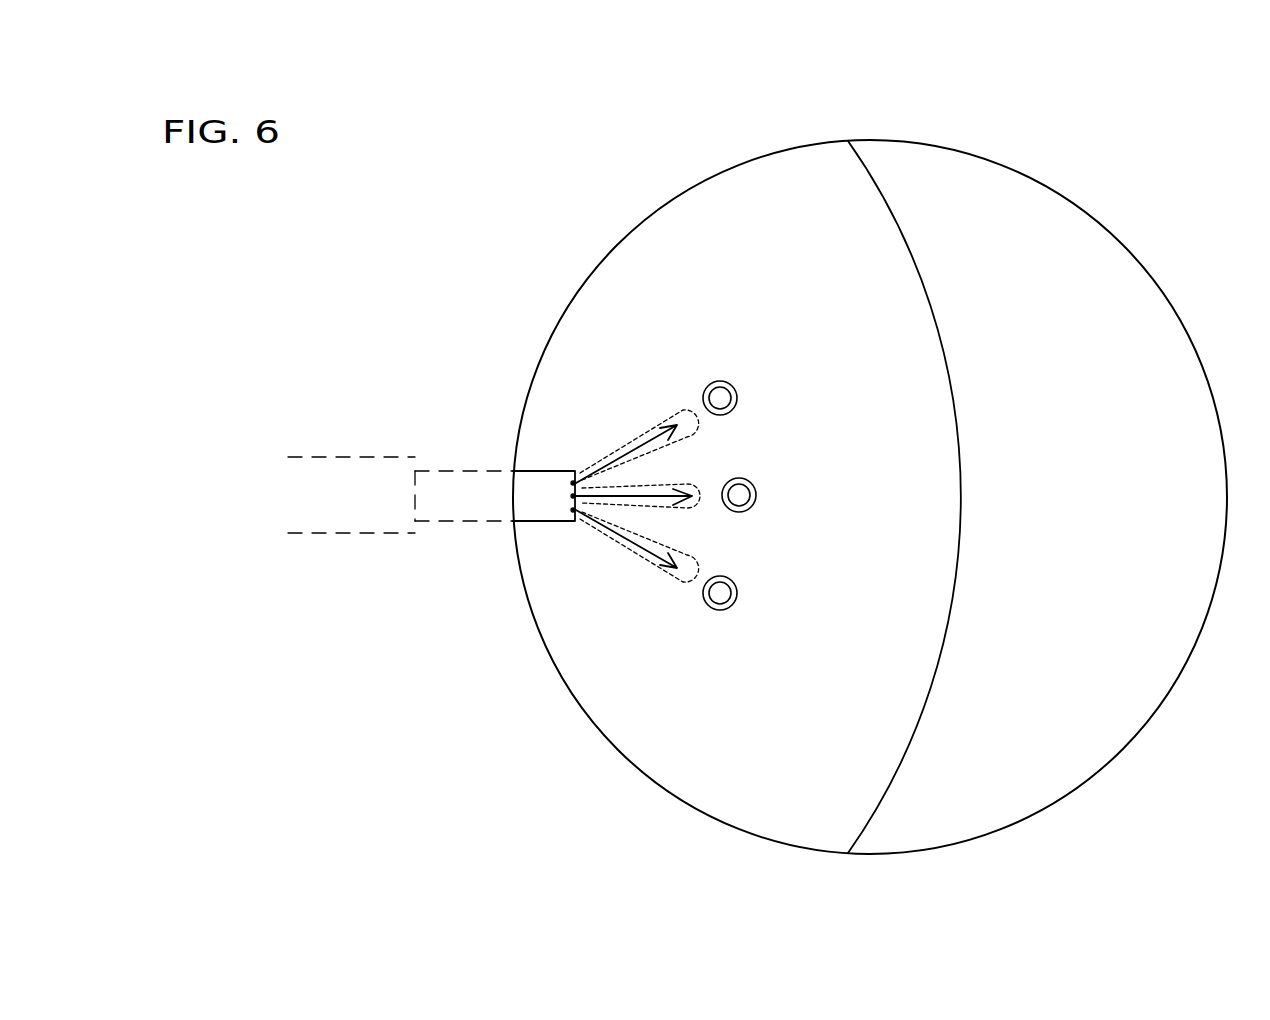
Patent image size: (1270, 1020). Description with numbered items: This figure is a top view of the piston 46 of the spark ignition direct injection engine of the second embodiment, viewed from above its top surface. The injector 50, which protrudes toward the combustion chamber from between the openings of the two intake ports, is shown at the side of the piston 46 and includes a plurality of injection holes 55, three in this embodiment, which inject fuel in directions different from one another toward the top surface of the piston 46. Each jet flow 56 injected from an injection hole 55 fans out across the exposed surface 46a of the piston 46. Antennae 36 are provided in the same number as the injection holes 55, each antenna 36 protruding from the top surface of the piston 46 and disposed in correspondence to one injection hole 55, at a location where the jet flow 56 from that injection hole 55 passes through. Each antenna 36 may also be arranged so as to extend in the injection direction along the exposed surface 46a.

The piston 46 is at (960, 150).
The exposed surface of the piston 46a is at (1047, 233).
The antenna 36 is at (737, 395).
The injector 50 is at (345, 453).
The injection hole 55 is at (578, 482).
The jet flow 56 is at (652, 420).